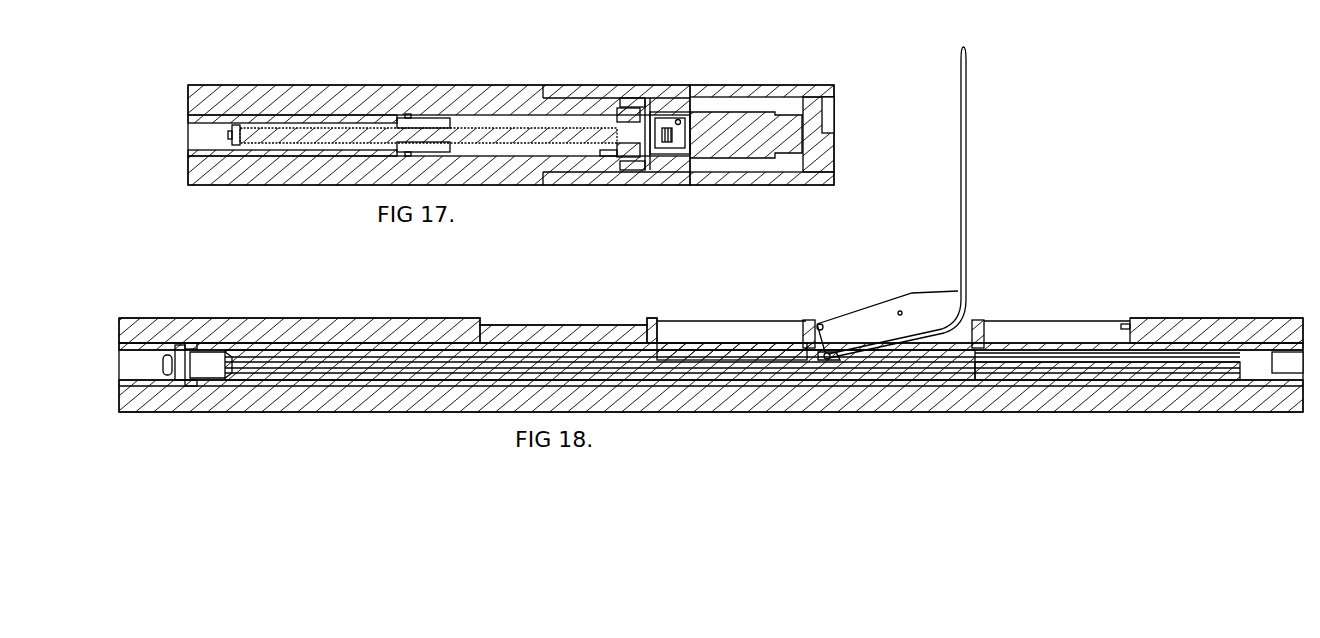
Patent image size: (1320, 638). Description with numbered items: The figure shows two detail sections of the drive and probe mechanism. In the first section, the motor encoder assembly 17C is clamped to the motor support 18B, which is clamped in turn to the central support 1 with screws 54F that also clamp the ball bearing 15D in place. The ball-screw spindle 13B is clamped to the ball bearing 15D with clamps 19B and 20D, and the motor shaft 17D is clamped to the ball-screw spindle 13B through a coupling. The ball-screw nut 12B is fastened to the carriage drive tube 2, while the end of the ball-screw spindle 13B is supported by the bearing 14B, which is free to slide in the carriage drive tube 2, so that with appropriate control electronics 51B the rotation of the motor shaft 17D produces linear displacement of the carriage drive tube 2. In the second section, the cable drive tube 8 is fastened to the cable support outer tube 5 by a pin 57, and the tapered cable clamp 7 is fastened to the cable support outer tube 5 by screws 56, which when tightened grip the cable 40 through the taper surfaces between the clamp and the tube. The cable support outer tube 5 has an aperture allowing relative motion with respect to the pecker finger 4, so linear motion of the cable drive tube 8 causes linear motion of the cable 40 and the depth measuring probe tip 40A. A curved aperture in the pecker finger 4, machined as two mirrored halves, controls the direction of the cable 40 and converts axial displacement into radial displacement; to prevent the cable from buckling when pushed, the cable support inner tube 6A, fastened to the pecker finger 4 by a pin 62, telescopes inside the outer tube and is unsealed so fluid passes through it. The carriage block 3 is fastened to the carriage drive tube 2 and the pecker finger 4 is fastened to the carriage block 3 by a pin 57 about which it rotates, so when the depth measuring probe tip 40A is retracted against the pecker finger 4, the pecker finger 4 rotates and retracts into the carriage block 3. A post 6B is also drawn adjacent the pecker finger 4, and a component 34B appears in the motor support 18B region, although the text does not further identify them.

In FIG. 18, the central support 1 is at (1196, 305).
In FIG. 17, the carriage drive tube 2 is at (511, 110).
In FIG. 18, the carriage drive tube 2 is at (711, 336).
In FIG. 18, the carriage block 3 is at (1007, 311).
In FIG. 18, the pecker finger 4 is at (891, 374).
In FIG. 18, the cable support outer tube 5 is at (743, 318).
In FIG. 18, the cable support inner tube 6A is at (732, 317).
In FIG. 18, the sleeve post 6B is at (817, 289).
In FIG. 18, the tapered cable clamp 7 is at (237, 320).
In FIG. 18, the cable drive tube 8 is at (160, 303).
In FIG. 18, the screws 56 is at (212, 322).
In FIG. 18, the pin 57 is at (526, 317).
In FIG. 18, the pin 62 is at (868, 311).
In FIG. 18, the cable 40 is at (991, 258).
In FIG. 18, the depth measuring probe tip 40A is at (1002, 53).
In FIG. 17, the ball-screw nut 12B is at (442, 95).
In FIG. 17, the ball-screw spindle 13B is at (428, 91).
In FIG. 17, the bearing 14B is at (292, 100).
In FIG. 17, the ball bearing 15D is at (610, 89).
In FIG. 17, the motor encoder assembly 17C is at (746, 96).
In FIG. 17, the motor shaft 17D is at (731, 169).
In FIG. 17, the motor support 18B is at (687, 92).
In FIG. 17, the clamp 19B is at (584, 188).
In FIG. 17, the clamp 20D is at (642, 166).
In FIG. 17, the spring 34B is at (685, 178).
In FIG. 17, the control electronics 51B is at (812, 100).
In FIG. 17, the screws 54F is at (650, 94).